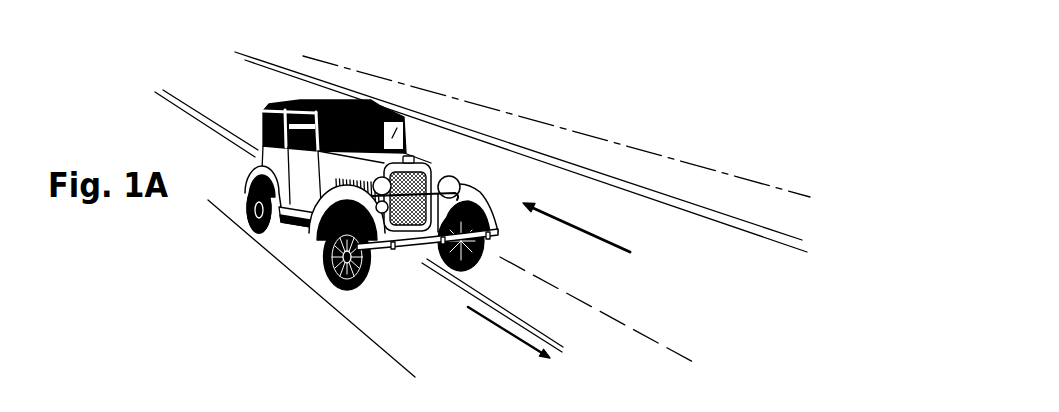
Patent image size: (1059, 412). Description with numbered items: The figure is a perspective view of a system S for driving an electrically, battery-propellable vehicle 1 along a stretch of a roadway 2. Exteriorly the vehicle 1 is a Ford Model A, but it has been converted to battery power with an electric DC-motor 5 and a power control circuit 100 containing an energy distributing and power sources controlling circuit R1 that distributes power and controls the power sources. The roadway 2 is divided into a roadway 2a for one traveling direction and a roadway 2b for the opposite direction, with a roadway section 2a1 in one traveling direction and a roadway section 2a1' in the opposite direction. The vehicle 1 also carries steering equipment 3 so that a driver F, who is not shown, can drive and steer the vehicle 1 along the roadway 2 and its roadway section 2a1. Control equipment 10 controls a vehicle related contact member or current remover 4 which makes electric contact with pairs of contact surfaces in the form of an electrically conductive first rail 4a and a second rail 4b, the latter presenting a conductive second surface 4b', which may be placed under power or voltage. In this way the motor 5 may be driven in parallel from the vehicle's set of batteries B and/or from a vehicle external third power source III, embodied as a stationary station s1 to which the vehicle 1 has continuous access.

The vehicle 1 is at (258, 127).
The stretch of a roadway 2 is at (416, 310).
The roadway in one traveling direction 2a is at (589, 391).
The roadway section in one traveling direction 2a1 is at (509, 340).
The roadway section in an opposite direction 2a1' is at (697, 162).
The roadway in an opposite traveling direction 2b is at (298, 78).
The steering equipment 3 is at (419, 135).
The current remover 4 is at (397, 255).
The first rail 4a is at (773, 240).
The second rail 4b is at (814, 217).
The second surface 4b' is at (531, 314).
The DC-motor 5 is at (425, 155).
The control equipment 10 is at (283, 230).
The power control circuit 100 is at (436, 164).
The energy distributing and power sources controlling circuit R1 is at (576, 227).
The driver F is at (372, 130).
The set of batteries B is at (313, 245).
The system S is at (588, 121).
The stationary station s1 is at (562, 339).
The third power source III is at (642, 310).